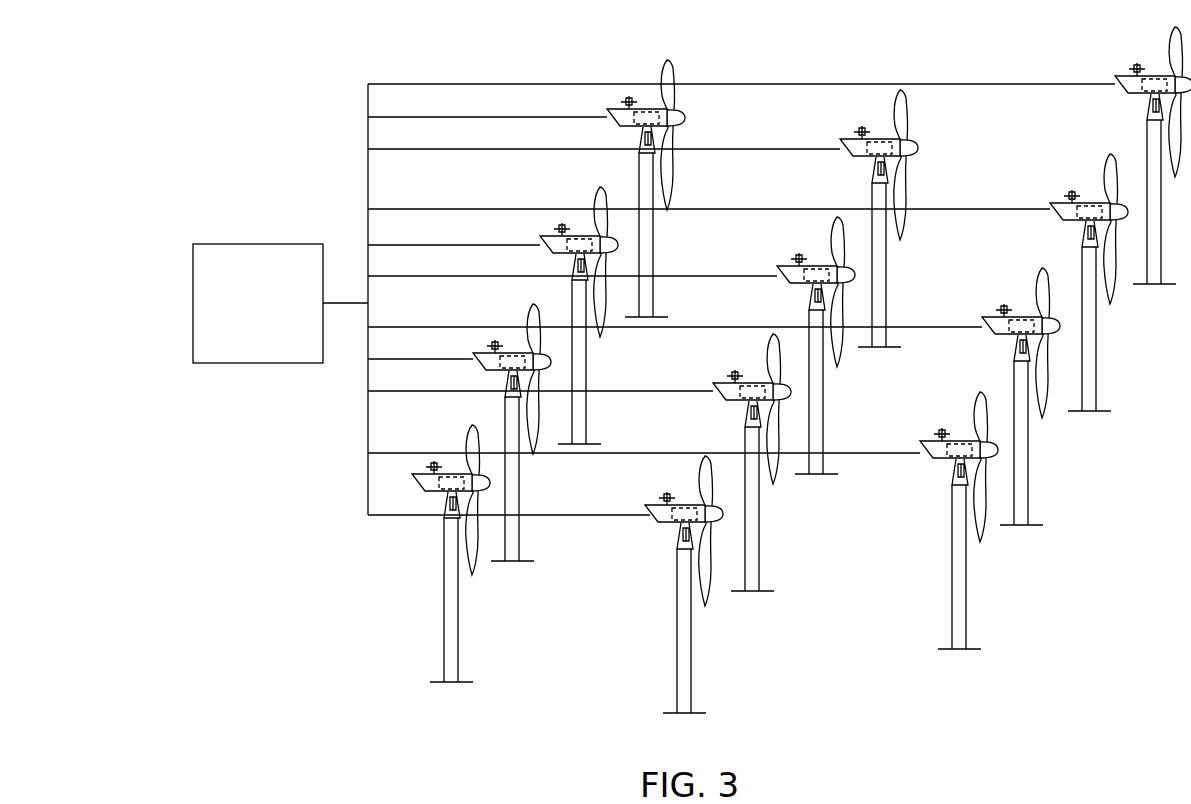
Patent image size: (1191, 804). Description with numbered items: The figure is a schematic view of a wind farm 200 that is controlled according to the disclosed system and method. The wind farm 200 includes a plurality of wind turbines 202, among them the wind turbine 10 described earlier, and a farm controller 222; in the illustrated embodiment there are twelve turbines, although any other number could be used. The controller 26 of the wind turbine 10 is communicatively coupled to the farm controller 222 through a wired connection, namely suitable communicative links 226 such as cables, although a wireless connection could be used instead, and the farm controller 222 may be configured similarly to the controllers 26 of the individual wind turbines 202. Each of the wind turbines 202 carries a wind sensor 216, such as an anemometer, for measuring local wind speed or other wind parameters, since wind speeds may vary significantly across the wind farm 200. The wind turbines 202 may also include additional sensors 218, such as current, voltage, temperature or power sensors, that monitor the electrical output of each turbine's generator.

The wind farm 200 is at (303, 142).
The farm controller 222 is at (281, 313).
The communicative links 226 is at (500, 208).
The wind turbines 202 is at (775, 510).
The wind turbine 10 is at (430, 547).
The controller 26 is at (385, 447).
The wind sensor 216 is at (635, 529).
The additional sensors 218 is at (648, 618).